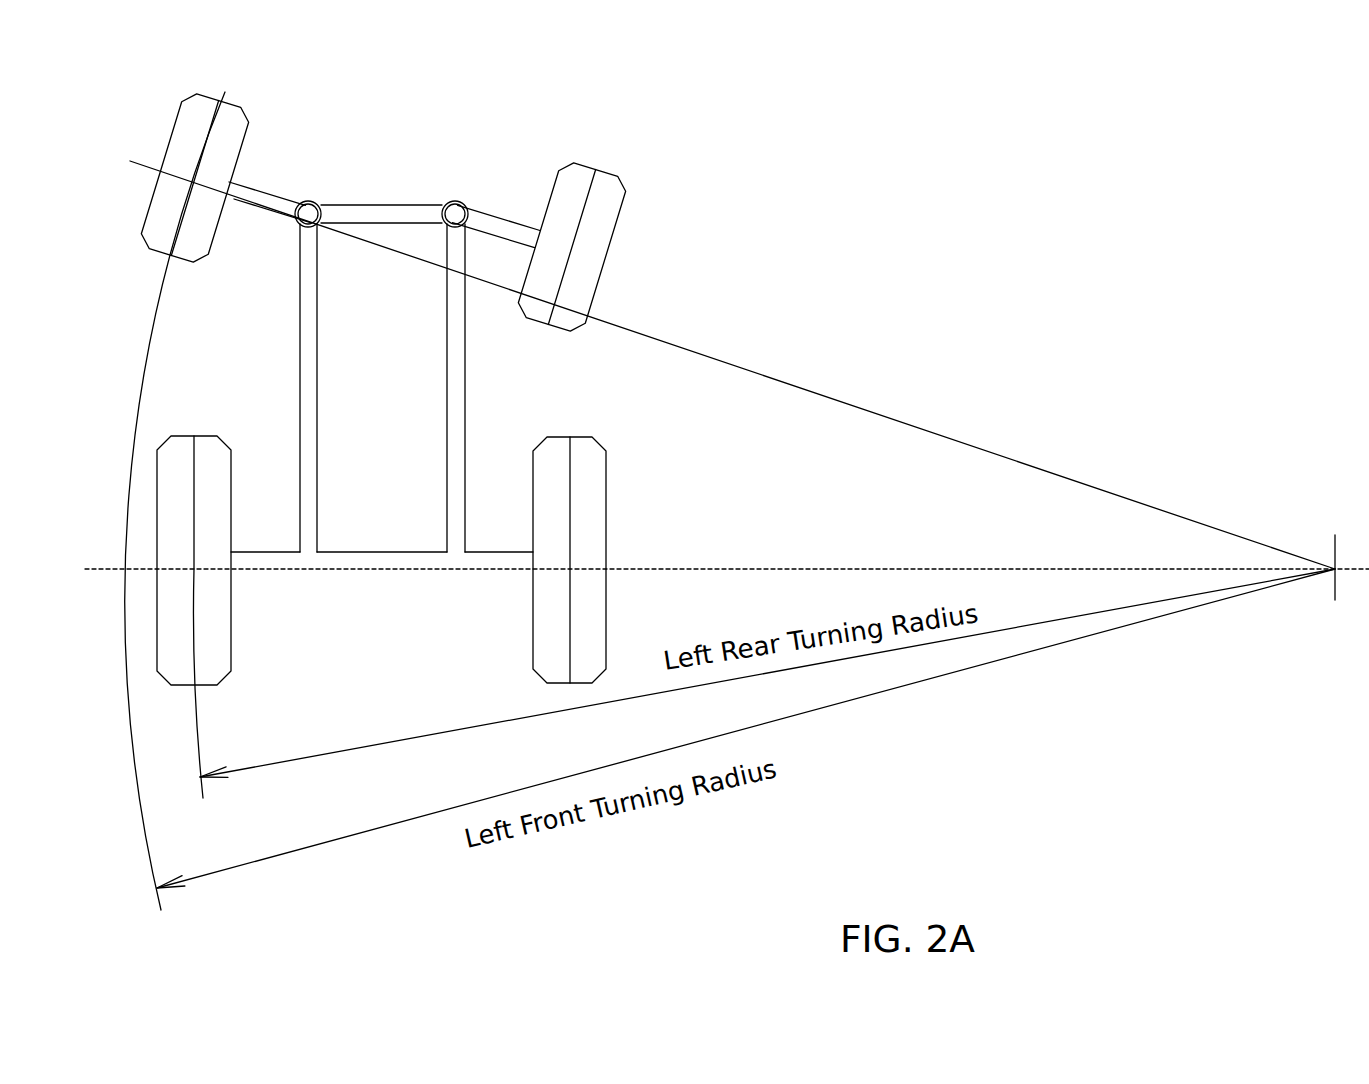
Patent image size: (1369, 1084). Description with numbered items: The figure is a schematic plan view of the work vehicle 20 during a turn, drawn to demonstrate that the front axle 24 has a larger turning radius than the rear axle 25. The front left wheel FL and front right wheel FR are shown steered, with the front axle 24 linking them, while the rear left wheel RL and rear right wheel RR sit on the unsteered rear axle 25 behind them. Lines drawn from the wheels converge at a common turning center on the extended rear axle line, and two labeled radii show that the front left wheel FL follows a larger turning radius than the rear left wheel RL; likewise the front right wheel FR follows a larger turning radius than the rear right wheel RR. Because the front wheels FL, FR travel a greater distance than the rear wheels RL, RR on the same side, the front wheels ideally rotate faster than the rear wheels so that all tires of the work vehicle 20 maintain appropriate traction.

The work vehicle 20 is at (490, 111).
The front axle 24 is at (358, 179).
The rear axle 25 is at (372, 604).
The front left wheel FL is at (153, 187).
The front right wheel FR is at (617, 232).
The rear left wheel RL is at (183, 436).
The rear right wheel RR is at (606, 488).